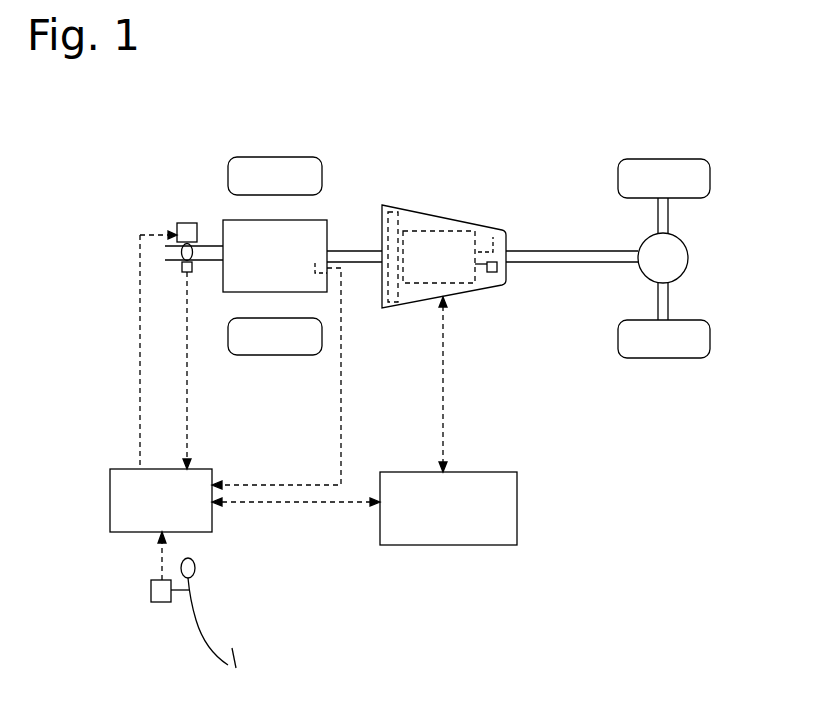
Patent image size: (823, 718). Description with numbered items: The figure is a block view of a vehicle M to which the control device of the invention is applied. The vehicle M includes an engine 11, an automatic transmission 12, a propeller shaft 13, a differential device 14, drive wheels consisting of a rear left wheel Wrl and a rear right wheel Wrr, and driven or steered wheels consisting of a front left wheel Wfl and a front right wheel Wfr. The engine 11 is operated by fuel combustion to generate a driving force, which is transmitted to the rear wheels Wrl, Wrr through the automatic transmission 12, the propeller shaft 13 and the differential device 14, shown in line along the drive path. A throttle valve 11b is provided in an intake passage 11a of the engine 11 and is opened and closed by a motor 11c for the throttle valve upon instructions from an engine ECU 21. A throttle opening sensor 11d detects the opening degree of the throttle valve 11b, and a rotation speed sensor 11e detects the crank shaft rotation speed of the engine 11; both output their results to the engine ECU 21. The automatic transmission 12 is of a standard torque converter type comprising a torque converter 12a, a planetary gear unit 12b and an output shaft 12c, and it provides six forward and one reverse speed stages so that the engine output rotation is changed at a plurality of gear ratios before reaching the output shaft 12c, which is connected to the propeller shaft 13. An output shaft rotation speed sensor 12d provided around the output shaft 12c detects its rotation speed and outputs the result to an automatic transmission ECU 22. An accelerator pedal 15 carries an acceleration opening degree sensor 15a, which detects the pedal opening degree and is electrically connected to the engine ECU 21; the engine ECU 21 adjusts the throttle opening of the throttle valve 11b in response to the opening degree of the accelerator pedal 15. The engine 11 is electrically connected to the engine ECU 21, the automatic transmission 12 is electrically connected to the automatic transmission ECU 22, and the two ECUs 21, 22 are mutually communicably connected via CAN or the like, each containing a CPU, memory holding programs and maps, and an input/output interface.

The vehicle M is at (476, 100).
The engine 11 is at (272, 220).
The intake passage 11a is at (211, 244).
The throttle valve 11b is at (193, 256).
The motor for throttle valve 11c is at (182, 222).
The throttle opening sensor 11d is at (180, 270).
The rotation speed sensor 11e is at (320, 280).
The automatic transmission 12 is at (427, 213).
The torque converter 12a is at (395, 208).
The planetary gear unit 12b is at (446, 232).
The output shaft 12c is at (493, 237).
The output shaft rotation speed sensor 12d is at (499, 267).
The propeller shaft 13 is at (573, 250).
The differential device 14 is at (690, 260).
The accelerator pedal 15 is at (202, 630).
The acceleration opening degree sensor 15a is at (160, 603).
The engine ECU 21 is at (200, 469).
The automatic transmission ECU 22 is at (455, 472).
The front right wheel Wfr is at (272, 157).
The front left wheel Wfl is at (275, 355).
The rear right wheel Wrr is at (660, 159).
The rear left wheel Wrl is at (710, 340).